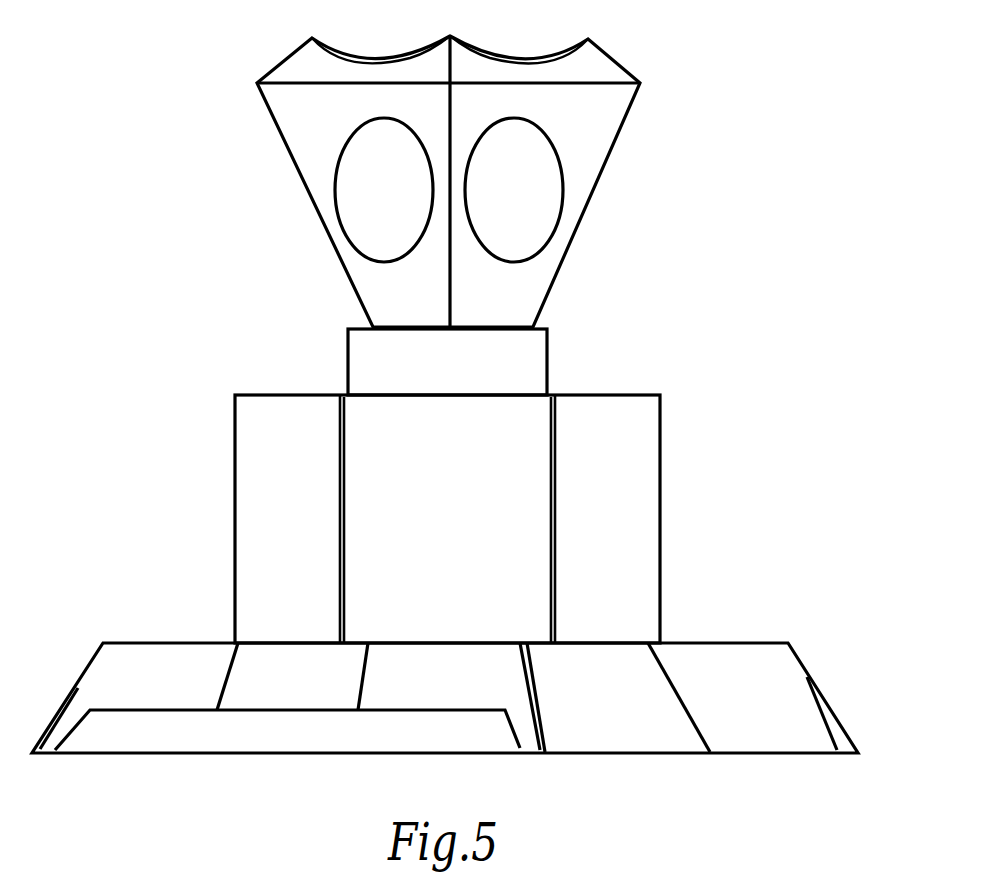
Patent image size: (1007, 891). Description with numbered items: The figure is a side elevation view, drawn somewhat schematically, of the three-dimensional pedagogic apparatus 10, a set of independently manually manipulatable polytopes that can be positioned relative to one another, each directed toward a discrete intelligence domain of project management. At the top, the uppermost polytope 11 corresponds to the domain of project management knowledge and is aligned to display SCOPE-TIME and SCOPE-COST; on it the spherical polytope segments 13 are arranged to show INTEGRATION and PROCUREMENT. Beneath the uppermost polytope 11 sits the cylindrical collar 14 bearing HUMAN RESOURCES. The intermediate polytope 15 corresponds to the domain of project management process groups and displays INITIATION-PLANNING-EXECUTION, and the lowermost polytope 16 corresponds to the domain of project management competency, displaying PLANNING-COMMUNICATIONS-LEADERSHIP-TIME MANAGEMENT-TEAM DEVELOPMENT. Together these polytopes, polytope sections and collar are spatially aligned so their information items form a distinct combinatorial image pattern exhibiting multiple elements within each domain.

The 3-dimensional pedagogic apparatus 10 is at (740, 288).
The uppermost polytope 11 is at (650, 112).
The spherical polytope segments 13 is at (382, 238).
The collar 14 is at (554, 372).
The intermediate polytope 15 is at (690, 423).
The lowermost polytope 16 is at (740, 626).